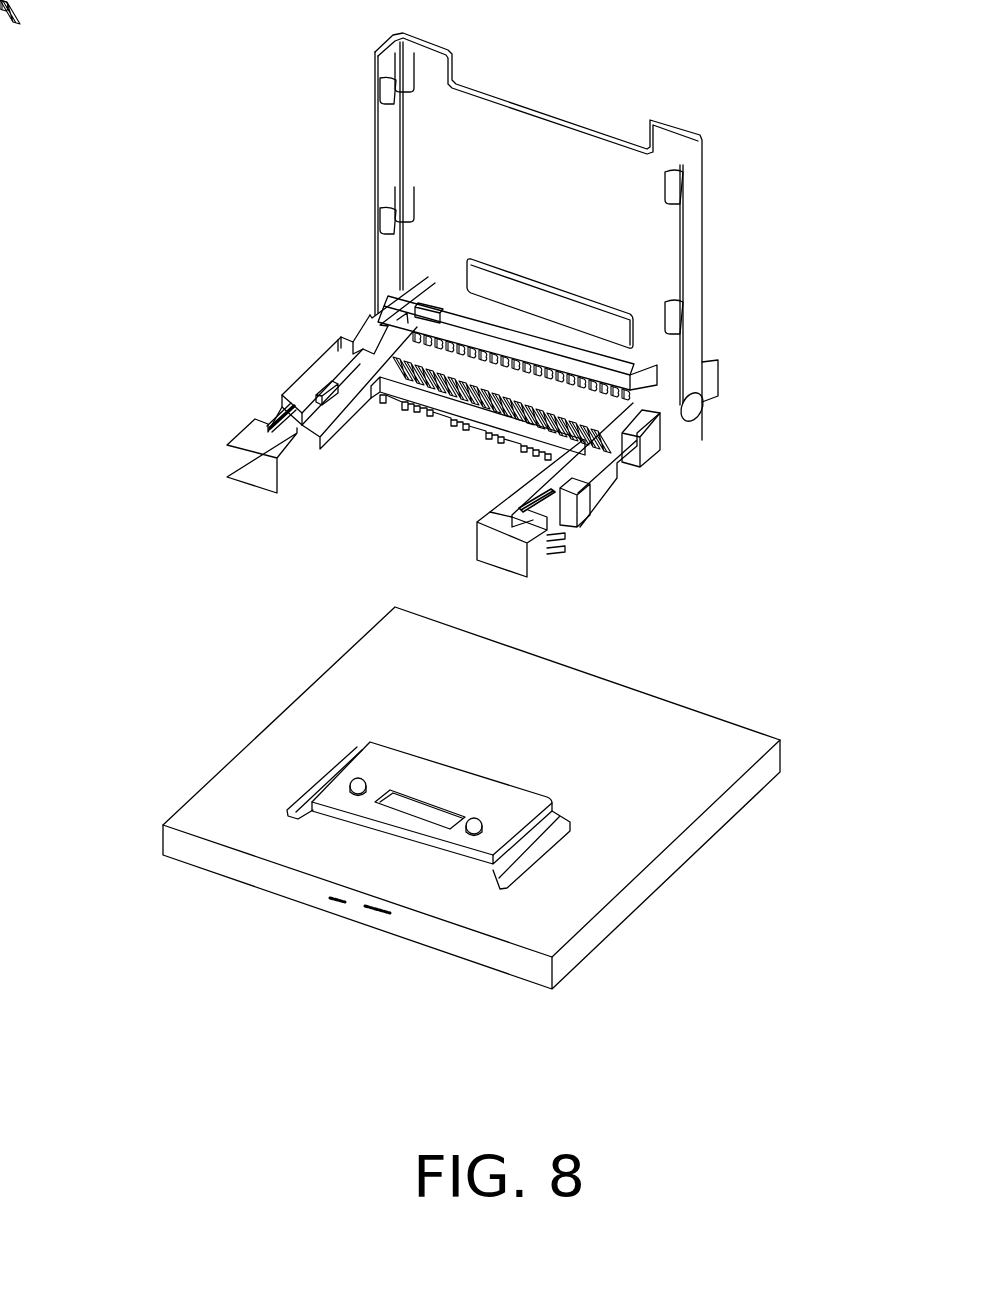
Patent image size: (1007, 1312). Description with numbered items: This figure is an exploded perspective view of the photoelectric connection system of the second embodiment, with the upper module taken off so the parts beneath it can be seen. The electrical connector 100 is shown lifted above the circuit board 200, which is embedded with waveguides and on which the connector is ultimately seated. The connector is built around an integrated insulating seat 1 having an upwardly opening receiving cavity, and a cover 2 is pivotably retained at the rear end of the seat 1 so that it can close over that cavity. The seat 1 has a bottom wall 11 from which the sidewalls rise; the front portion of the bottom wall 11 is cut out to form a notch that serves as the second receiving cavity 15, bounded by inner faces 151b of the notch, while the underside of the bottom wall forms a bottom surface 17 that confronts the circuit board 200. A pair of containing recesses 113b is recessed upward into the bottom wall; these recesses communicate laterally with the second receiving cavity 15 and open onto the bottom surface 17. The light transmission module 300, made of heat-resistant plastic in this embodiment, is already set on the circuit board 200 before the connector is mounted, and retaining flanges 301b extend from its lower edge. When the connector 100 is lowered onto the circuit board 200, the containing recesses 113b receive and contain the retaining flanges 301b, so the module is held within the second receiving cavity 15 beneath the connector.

The electrical connector 100 is at (437, 193).
The insulating seat 1 is at (312, 378).
The metal shell 2 is at (585, 185).
The bottom wall 11 is at (382, 358).
The second receiving cavity 15 is at (388, 486).
The bottom surface 17 is at (242, 494).
The retention portion 151b is at (302, 469).
The containing recesses 113b is at (330, 444).
The circuit board 200 is at (624, 722).
The light transmission module 300 is at (333, 786).
The retaining flanges 301b is at (285, 806).